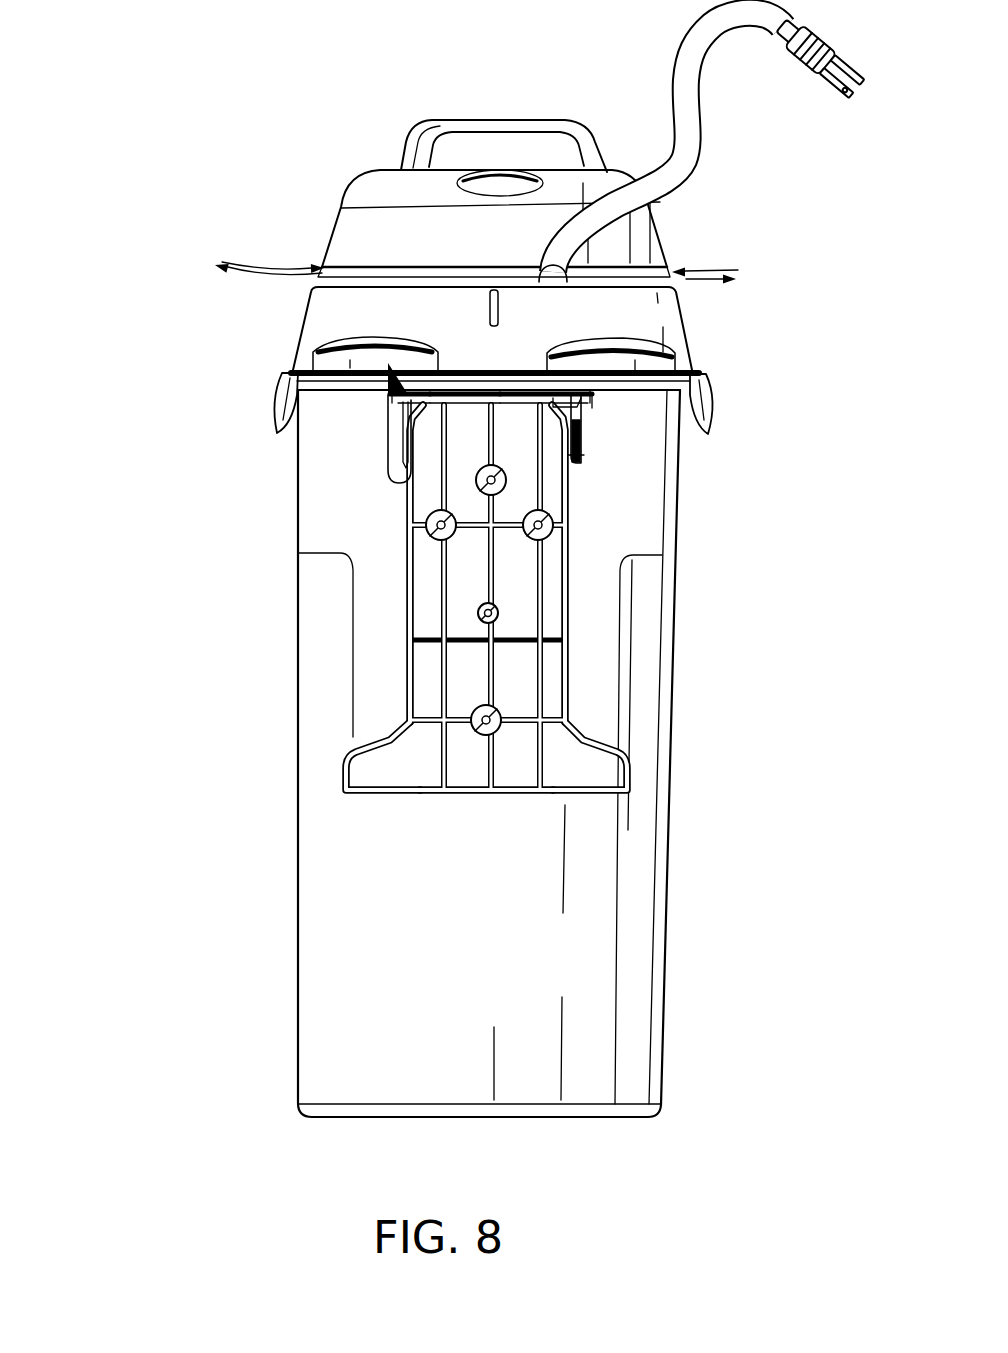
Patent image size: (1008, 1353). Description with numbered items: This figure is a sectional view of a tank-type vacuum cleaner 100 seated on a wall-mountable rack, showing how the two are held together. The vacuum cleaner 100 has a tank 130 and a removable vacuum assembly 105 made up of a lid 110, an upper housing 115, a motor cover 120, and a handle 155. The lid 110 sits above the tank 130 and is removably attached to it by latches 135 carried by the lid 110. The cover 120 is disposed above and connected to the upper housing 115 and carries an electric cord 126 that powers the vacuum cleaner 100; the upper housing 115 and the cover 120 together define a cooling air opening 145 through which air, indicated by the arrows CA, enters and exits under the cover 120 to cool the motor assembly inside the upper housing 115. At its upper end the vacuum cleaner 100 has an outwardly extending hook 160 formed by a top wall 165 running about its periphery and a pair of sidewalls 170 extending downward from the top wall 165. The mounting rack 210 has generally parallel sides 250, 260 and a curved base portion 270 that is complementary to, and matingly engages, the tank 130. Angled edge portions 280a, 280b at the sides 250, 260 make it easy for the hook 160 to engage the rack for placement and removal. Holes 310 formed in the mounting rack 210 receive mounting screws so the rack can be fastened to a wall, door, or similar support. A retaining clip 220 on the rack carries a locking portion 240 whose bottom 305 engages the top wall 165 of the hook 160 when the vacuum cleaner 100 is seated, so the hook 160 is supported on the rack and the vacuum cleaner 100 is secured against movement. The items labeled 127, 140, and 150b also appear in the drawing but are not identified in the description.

The vacuum cleaner 100 is at (368, 96).
The removable vacuum assembly 105 is at (252, 317).
The lid 110 is at (692, 380).
The upper housing 115 is at (690, 316).
The motor cover 120 is at (660, 237).
The electric cord 126 is at (540, 262).
The power cord 127 is at (672, 82).
The tank 130 is at (678, 667).
The latches 135 is at (275, 392).
The retaining lip 140 is at (583, 420).
The cooling air opening 145 is at (486, 270).
The hook tab 150b is at (582, 450).
The handle 155 is at (485, 118).
The hook 160 is at (521, 375).
The top wall 165 is at (465, 392).
The sidewalls 170 is at (410, 415).
The mounting rack 210 is at (455, 600).
The retaining clip 220 is at (350, 430).
The locking portion 240 is at (399, 362).
The side 250 is at (573, 579).
The side 260 is at (405, 587).
The base portion 270 is at (367, 740).
The edge portion 280a is at (393, 413).
The edge portion 280b is at (581, 398).
The bottom 305 is at (425, 392).
The holes 310 is at (503, 483).